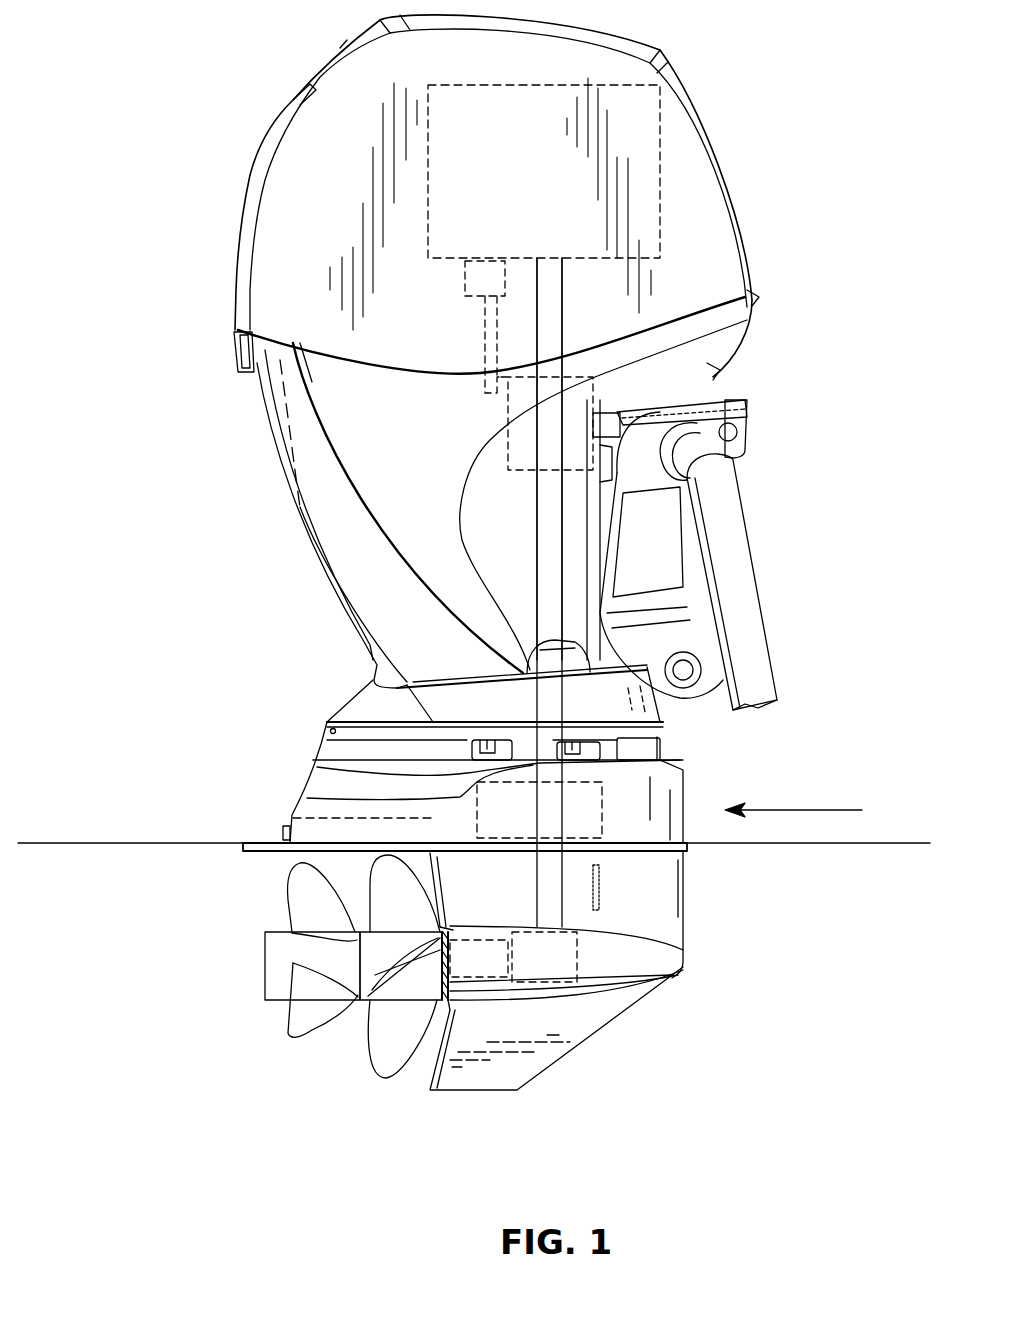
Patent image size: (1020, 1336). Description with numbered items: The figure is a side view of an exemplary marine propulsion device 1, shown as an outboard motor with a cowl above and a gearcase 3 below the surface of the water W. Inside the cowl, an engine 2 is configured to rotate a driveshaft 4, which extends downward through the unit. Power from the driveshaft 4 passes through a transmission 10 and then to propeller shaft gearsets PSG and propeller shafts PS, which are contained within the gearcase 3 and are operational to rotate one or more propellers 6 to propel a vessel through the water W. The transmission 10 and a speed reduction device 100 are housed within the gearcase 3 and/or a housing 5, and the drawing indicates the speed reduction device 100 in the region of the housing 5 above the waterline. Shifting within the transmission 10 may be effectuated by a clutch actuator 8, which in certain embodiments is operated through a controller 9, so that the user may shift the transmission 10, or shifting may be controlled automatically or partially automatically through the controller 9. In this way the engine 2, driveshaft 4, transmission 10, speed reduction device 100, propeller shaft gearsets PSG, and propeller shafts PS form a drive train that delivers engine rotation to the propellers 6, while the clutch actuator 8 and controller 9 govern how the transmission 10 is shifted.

The propulsion device 1 is at (190, 147).
The engine 2 is at (558, 189).
The gearcase 3 is at (668, 1028).
The driveshaft 4 is at (553, 321).
The housing 5 is at (805, 812).
The propeller 6 is at (298, 1033).
The clutch actuator 8 is at (485, 332).
The controller 9 is at (492, 296).
The transmission 10 is at (580, 395).
The speed reduction device 100 is at (587, 798).
The propeller shaft PS is at (478, 960).
The propeller shaft gearset PSG is at (563, 965).
The water W is at (899, 922).